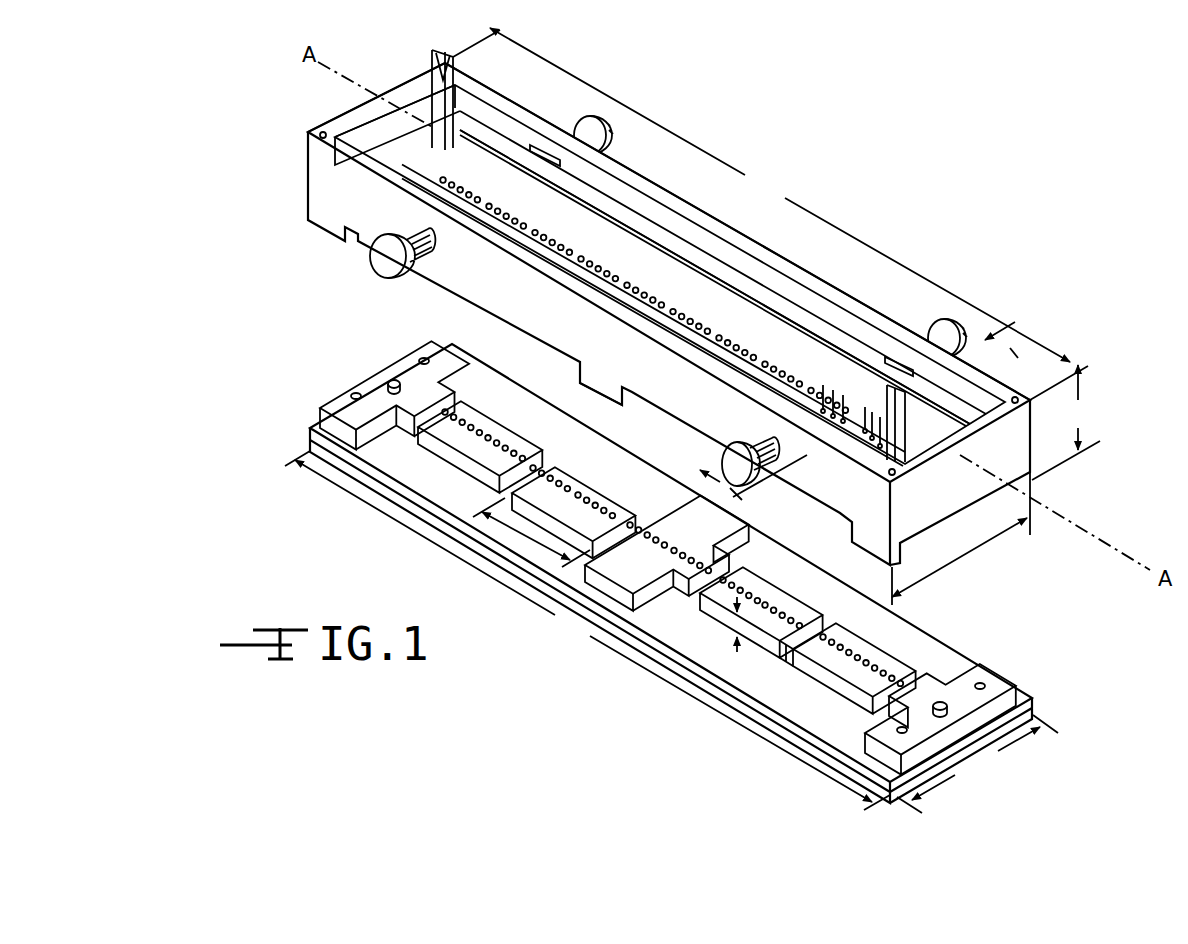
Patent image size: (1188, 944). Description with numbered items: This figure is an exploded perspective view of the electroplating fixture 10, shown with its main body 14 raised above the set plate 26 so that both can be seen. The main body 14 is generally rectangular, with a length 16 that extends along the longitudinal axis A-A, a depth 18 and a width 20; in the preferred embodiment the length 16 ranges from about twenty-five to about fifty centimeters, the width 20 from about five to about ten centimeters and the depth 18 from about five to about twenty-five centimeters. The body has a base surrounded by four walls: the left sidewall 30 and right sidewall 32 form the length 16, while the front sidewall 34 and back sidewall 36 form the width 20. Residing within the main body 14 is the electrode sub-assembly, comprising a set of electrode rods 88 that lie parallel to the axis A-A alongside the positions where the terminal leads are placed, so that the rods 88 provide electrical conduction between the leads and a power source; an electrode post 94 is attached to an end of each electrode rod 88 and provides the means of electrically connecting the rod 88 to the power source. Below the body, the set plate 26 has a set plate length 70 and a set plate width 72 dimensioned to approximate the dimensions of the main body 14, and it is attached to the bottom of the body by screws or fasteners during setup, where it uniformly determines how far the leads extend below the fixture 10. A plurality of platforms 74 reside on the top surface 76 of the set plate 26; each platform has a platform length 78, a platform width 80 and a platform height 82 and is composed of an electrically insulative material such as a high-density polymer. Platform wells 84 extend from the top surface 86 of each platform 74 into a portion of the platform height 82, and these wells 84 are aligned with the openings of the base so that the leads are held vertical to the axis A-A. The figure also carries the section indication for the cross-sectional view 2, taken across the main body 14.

The electroplating fixture 10 is at (862, 170).
The main body 14 is at (290, 192).
The length 16 is at (770, 214).
The depth 18 is at (1066, 422).
The width 20 is at (961, 538).
The set plate 26 is at (325, 503).
The left sidewall 30 is at (845, 292).
The right sidewall 32 is at (677, 398).
The front sidewall 34 is at (898, 495).
The back sidewall 36 is at (403, 92).
The set plate length 70 is at (587, 630).
The set plate width 72 is at (961, 738).
The platforms 74 is at (568, 522).
The top surface of the set plate 76 is at (415, 470).
The platform length 78 is at (531, 532).
The platform width 80 is at (802, 628).
The platform height 82 is at (738, 622).
The platform wells 84 is at (520, 458).
The top surface of the platform 86 is at (864, 651).
The electrode rods 88 is at (577, 217).
The electrode post 94 is at (446, 55).
The section line 2- 2 is at (849, 407).